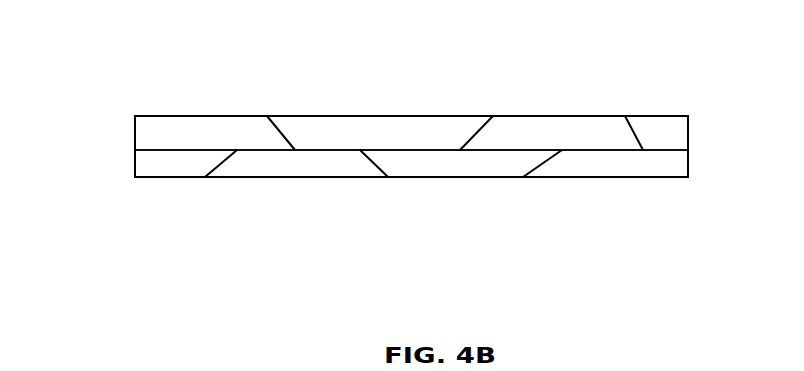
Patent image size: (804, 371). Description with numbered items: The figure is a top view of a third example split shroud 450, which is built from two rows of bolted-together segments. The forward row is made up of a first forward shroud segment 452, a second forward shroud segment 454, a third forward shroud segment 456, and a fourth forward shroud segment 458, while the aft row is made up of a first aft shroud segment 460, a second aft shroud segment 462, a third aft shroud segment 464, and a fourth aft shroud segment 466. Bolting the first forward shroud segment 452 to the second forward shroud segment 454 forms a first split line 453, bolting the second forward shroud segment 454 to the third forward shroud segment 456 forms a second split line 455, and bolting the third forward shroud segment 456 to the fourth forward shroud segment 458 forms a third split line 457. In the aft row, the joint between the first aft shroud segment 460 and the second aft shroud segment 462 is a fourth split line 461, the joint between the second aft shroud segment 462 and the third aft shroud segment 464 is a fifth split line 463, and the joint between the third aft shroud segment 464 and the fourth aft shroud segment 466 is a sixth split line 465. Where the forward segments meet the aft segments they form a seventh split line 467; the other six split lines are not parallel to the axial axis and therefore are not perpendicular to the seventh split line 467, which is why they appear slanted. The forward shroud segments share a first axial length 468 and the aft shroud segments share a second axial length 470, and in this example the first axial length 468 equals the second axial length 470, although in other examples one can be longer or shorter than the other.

The third split shroud 450 is at (103, 58).
The first forward shroud segment 452 is at (233, 116).
The first split line 453 is at (295, 116).
The second forward shroud segment 454 is at (423, 116).
The second split line 455 is at (463, 116).
The third forward shroud segment 456 is at (610, 116).
The third split line 457 is at (630, 116).
The fourth forward shroud segment 458 is at (660, 116).
The first aft shroud segment 460 is at (178, 177).
The fourth split line 461 is at (215, 168).
The second aft shroud segment 462 is at (355, 177).
The fifth split line 463 is at (375, 177).
The third aft shroud segment 464 is at (515, 177).
The sixth split line 465 is at (537, 172).
The fourth aft shroud segment 466 is at (565, 177).
The seventh split line 467 is at (168, 150).
The first axial length 468 is at (702, 117).
The second axial length 470 is at (702, 151).